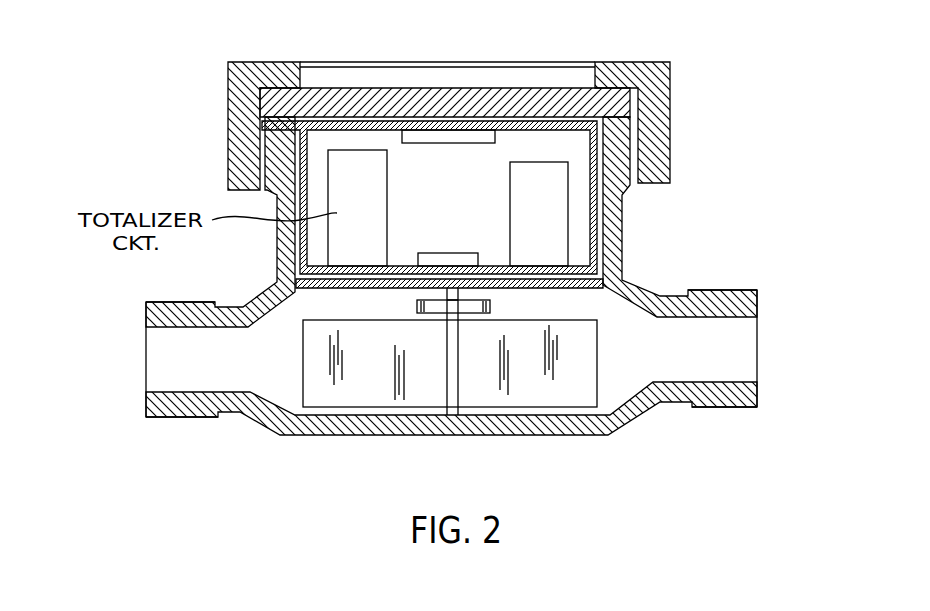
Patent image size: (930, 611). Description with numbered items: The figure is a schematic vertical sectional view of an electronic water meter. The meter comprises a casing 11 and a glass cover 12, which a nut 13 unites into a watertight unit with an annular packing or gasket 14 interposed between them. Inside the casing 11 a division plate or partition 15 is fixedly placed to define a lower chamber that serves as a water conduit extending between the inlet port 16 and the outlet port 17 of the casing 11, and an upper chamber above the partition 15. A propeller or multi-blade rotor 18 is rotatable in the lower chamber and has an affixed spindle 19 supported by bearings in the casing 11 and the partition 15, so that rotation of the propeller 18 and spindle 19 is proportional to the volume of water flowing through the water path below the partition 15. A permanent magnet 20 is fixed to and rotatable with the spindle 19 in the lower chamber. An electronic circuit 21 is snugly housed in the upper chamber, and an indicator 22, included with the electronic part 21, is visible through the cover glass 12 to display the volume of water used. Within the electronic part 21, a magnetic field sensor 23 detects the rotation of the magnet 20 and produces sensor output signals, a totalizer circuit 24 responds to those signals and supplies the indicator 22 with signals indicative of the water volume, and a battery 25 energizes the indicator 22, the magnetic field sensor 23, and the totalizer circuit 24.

The casing 11 is at (262, 426).
The glass cover 12 is at (555, 85).
The nut 13 is at (670, 158).
The annular packing or gasket 14 is at (632, 116).
The division plate or partition 15 is at (375, 290).
The inlet port 16 is at (170, 392).
The outlet port 17 is at (743, 380).
The propeller or multi-blade rotor 18 is at (303, 362).
The spindle 19 is at (446, 393).
The permanent magnet 20 is at (492, 309).
The electronic circuit 21 is at (427, 188).
The indicator 22 is at (448, 143).
The magnetic field sensor 23 is at (451, 253).
The totalizer circuit 24 is at (388, 235).
The battery 25 is at (533, 161).